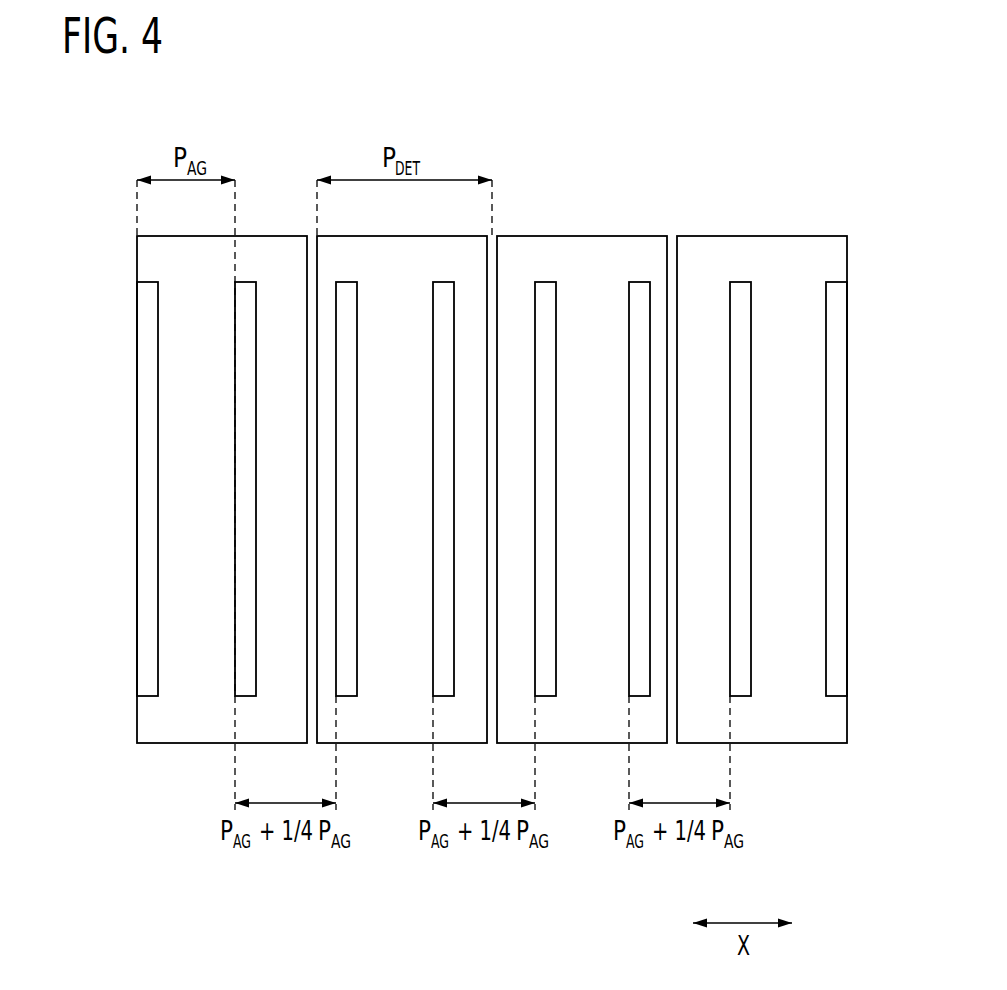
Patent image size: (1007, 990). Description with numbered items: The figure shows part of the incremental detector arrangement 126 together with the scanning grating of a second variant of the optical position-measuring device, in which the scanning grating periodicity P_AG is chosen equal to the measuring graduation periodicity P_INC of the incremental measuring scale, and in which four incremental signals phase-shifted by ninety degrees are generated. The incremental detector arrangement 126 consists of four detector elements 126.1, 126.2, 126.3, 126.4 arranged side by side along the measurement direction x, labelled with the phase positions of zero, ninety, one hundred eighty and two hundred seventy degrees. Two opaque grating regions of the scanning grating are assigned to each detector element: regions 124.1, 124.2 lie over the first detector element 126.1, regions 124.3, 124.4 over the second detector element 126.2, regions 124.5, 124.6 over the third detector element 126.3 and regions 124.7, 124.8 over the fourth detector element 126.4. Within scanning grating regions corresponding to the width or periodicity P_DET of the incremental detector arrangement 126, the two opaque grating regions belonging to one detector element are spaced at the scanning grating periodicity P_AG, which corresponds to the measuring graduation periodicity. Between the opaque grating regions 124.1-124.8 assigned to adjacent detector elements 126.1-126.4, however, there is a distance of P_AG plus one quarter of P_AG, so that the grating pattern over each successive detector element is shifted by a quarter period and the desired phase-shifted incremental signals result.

The opaque grating region 124.1 is at (147, 325).
The opaque grating region 124.2 is at (245, 380).
The opaque grating region 124.3 is at (345, 423).
The opaque grating region 124.4 is at (444, 462).
The opaque grating region 124.5 is at (545, 292).
The opaque grating region 124.6 is at (638, 295).
The opaque grating region 124.7 is at (740, 295).
The opaque grating region 124.8 is at (833, 295).
The incremental detector arrangement 126 is at (108, 748).
The detector element 126.1 is at (178, 730).
The detector element 126.2 is at (385, 730).
The detector element 126.3 is at (583, 731).
The detector element 126.4 is at (780, 731).